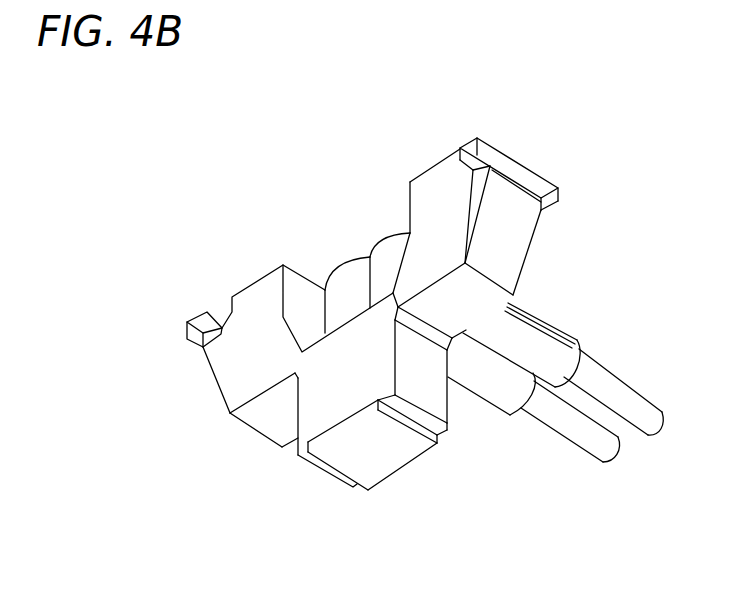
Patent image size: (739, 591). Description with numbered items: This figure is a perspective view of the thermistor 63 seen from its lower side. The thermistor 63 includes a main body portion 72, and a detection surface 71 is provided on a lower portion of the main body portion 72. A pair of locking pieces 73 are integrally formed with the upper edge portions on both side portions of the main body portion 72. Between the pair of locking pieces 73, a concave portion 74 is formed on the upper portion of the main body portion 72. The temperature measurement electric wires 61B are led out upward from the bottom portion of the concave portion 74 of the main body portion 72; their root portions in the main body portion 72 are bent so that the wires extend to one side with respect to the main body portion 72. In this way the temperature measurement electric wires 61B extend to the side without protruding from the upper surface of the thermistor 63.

The thermistor 63 is at (398, 329).
The detection surface 71 is at (382, 462).
The main body portion 72 is at (305, 402).
The locking pieces 73 is at (376, 261).
The concave portion 74 is at (298, 337).
The temperature measurement electric wires 61B is at (605, 395).